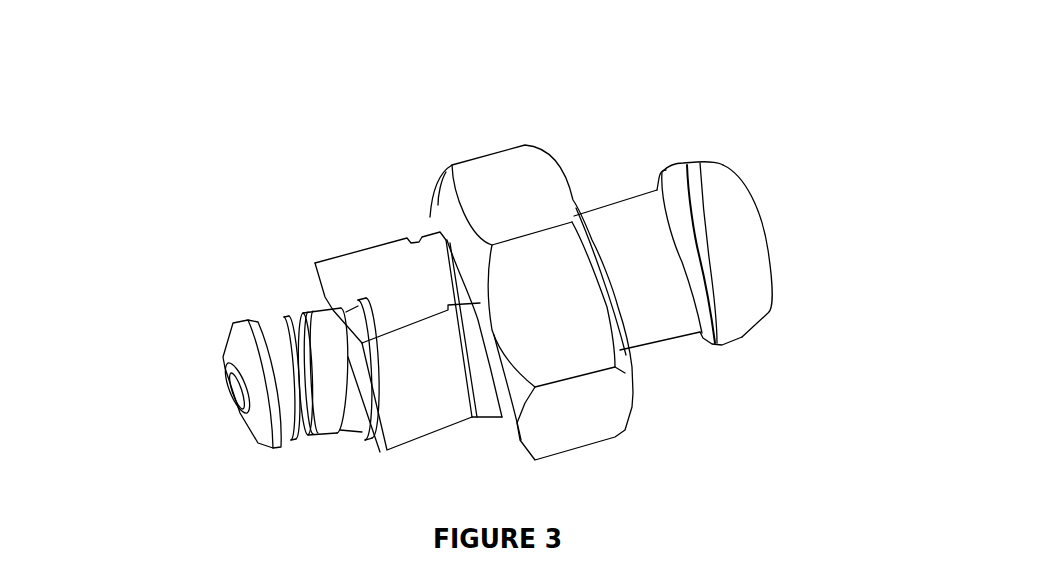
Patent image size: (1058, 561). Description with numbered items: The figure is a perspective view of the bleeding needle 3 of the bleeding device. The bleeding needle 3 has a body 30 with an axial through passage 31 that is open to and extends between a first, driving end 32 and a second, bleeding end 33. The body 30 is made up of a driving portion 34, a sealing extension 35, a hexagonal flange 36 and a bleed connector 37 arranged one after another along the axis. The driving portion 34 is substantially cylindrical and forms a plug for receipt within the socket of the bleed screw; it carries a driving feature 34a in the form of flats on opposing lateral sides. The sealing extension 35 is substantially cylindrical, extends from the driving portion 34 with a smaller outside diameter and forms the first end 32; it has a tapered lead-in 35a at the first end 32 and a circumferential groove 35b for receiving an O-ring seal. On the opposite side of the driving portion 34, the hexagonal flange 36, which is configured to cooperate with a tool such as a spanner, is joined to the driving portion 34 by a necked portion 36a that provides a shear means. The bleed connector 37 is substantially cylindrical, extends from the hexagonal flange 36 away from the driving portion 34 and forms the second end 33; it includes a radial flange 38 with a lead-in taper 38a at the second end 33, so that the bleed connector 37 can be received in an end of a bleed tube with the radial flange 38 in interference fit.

The bleeding needle 3 is at (298, 110).
The body 30 is at (498, 157).
The axial through passage 31 is at (230, 393).
The first, driving end 32 is at (191, 349).
The second, bleeding end 33 is at (799, 184).
The driving portion 34 is at (318, 274).
The driving feature 34a is at (418, 300).
The sealing extension 35 is at (337, 427).
The tapered lead-in 35a is at (226, 340).
The circumferential groove 35b is at (272, 338).
The hexagonal flange 36 is at (563, 321).
The necked portion 36a is at (483, 407).
The bleed connector 37 is at (625, 210).
The radial flange 38 is at (725, 340).
The lead-in taper 38a is at (757, 310).